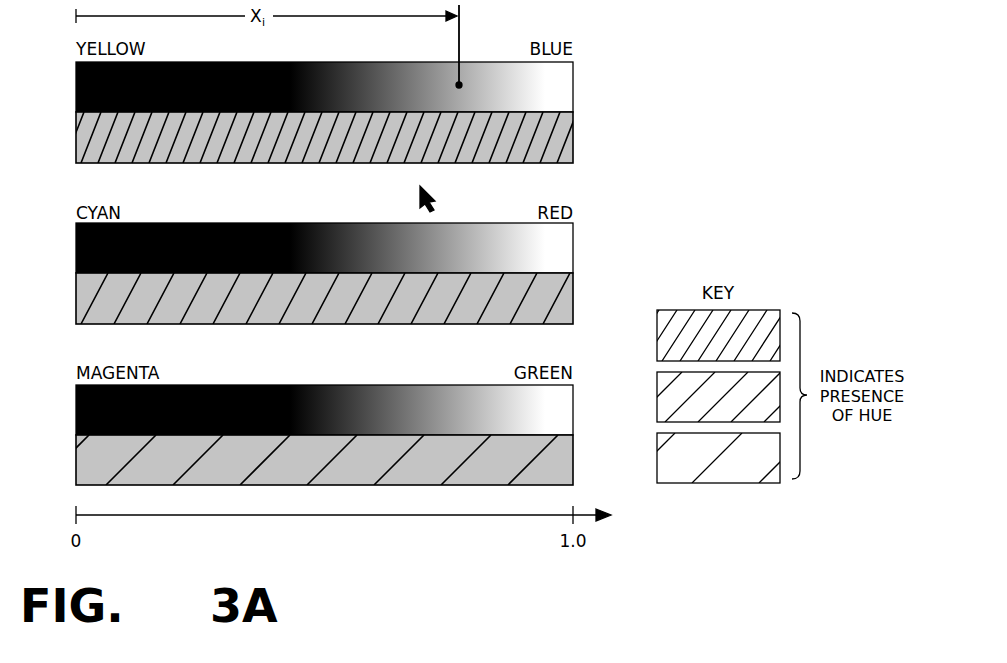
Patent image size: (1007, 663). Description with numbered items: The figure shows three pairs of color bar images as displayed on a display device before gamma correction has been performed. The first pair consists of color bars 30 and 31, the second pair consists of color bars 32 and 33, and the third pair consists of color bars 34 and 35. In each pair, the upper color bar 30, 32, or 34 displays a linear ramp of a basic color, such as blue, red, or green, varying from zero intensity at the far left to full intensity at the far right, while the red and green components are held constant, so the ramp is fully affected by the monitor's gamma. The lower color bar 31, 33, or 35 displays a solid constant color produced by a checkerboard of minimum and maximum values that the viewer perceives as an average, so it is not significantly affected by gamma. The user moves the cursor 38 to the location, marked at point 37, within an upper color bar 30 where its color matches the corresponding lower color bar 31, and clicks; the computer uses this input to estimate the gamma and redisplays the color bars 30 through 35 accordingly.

The color bar 30 is at (574, 88).
The color bar 31 is at (574, 136).
The color bar 32 is at (574, 250).
The color bar 33 is at (574, 296).
The color bar 34 is at (574, 410).
The color bar 35 is at (574, 456).
The selected position marker 37 is at (462, 81).
The cursor 38 is at (435, 202).